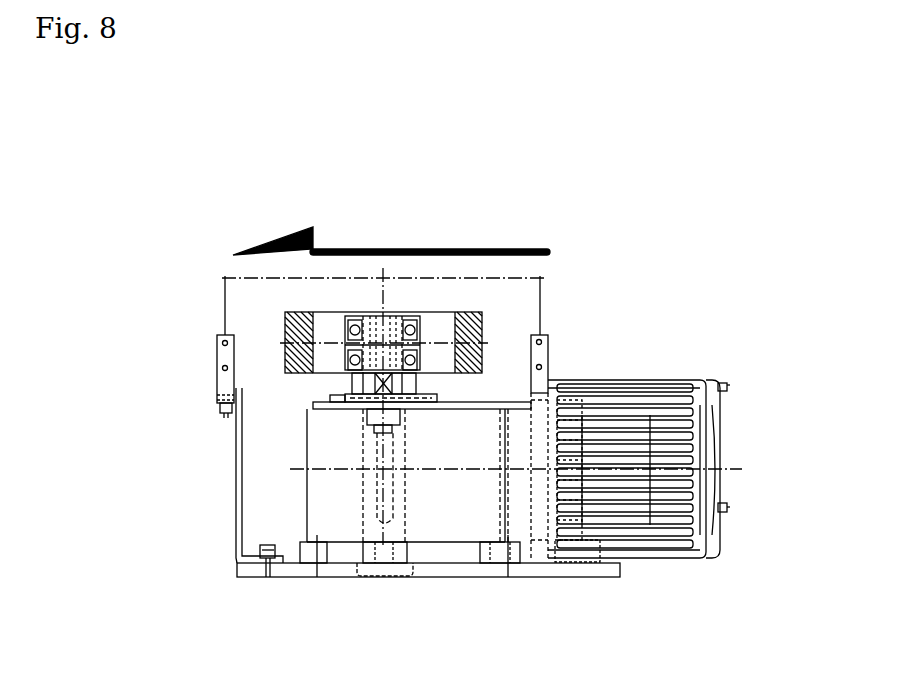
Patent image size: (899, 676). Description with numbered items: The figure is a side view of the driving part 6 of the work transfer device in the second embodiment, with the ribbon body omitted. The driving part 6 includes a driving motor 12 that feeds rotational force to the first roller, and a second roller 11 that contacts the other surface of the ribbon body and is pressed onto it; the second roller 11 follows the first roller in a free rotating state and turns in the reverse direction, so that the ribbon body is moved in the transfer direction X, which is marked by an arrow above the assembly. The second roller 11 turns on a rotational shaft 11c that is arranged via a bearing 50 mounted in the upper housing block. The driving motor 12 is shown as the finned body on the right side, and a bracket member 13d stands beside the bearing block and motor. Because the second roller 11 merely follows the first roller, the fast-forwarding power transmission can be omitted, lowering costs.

The transfer direction X is at (496, 250).
The bearing 50 is at (362, 330).
The second roller 11 is at (285, 330).
The rotational shaft 11c is at (345, 383).
The support bracket 13d is at (497, 393).
The driving part 6 is at (728, 352).
The driving motor 12 is at (667, 533).